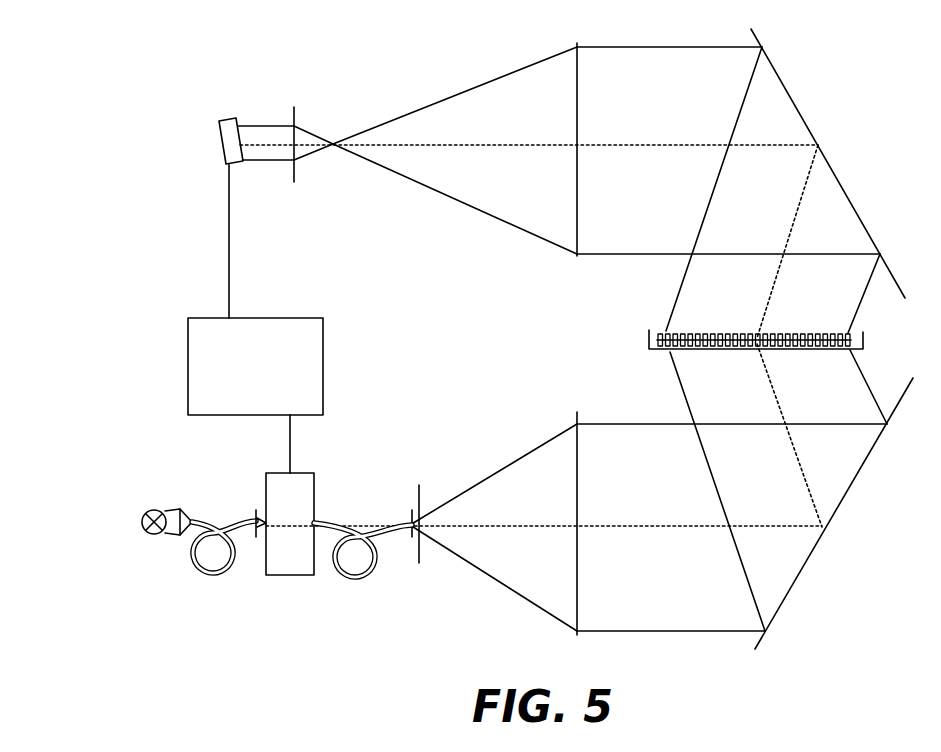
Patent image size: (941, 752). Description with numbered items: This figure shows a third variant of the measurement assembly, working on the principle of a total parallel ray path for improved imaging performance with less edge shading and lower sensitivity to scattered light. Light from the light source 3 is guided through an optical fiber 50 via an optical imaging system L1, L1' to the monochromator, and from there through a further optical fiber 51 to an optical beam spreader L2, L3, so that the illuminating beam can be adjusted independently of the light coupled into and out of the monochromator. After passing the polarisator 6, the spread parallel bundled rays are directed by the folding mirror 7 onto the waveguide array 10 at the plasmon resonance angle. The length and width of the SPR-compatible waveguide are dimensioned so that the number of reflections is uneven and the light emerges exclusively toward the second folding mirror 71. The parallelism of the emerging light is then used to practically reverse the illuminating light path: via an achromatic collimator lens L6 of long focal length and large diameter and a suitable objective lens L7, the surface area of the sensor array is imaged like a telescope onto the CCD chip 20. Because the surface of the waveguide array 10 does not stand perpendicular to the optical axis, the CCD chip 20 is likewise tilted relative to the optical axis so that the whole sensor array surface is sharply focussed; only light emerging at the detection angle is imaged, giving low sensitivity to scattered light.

The light source 3 is at (152, 534).
The optical imaging system L1 is at (155, 501).
The optical fiber 50 is at (205, 574).
The optical imaging system L1' is at (232, 502).
The optical fiber 51 is at (335, 577).
The optical beam spreader L2 is at (412, 538).
The polarisator 6 is at (419, 562).
The optical beam spreader L3 is at (577, 413).
The folding mirror 7 is at (851, 485).
The waveguide array 10 is at (863, 338).
The second folding mirror 71 is at (843, 190).
The achromatic collimator lens L6 is at (576, 47).
The objective lens L7 is at (294, 108).
The CCD chip 20 is at (221, 126).